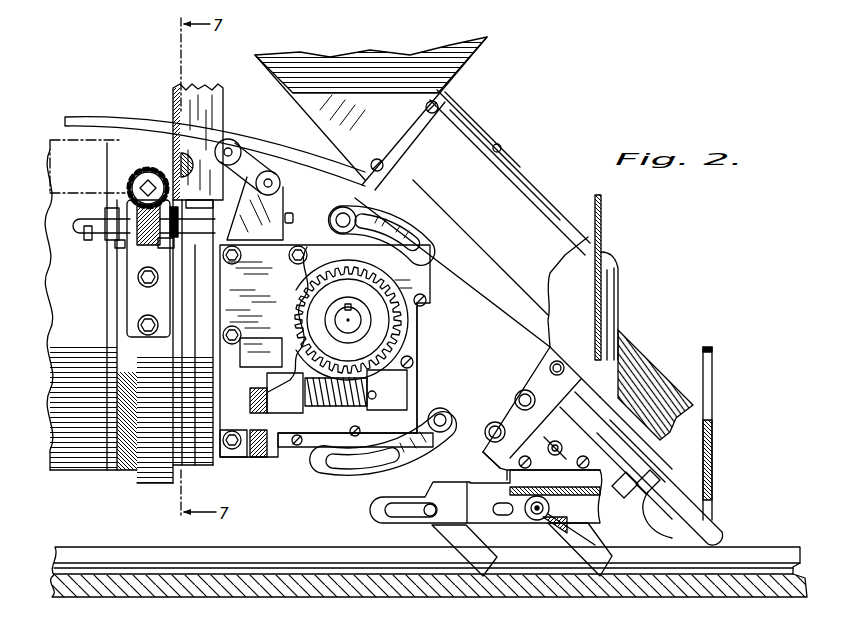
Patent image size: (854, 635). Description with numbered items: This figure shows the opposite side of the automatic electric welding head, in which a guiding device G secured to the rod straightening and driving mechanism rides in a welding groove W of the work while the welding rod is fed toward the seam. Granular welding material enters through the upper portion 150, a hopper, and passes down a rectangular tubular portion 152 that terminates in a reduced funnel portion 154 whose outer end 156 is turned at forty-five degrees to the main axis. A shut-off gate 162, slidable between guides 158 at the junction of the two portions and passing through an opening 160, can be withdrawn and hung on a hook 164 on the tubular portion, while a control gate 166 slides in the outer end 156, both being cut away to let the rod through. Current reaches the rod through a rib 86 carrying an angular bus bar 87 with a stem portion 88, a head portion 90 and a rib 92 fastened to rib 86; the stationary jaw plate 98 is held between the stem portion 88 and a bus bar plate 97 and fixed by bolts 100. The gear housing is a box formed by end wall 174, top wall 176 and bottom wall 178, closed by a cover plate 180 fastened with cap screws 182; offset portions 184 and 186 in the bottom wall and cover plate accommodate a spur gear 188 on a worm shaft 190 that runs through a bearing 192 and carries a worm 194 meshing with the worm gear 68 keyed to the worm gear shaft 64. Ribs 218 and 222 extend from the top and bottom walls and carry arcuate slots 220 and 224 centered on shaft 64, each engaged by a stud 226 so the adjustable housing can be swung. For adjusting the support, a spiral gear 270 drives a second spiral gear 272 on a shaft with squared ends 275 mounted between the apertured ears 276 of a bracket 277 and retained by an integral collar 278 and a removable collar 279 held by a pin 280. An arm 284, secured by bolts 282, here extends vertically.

The worm gear shaft 64 is at (348, 317).
The worm gear 68 is at (348, 320).
The rib 86 is at (484, 424).
The bus bar 87 is at (507, 458).
The stem portion 88 is at (643, 492).
The head portion 90 is at (538, 424).
The rib 92 is at (493, 407).
The bus bar plate 97 is at (660, 474).
The stationary jaw plate 98 is at (663, 508).
The bolts 100 is at (630, 487).
The upper portion 150 is at (463, 67).
The rectangular tubular portion 152 is at (530, 187).
The funnel portion 154 is at (658, 367).
The outer end 156 is at (690, 489).
The guides 158 is at (608, 313).
The opening 160 is at (619, 264).
The shut-off gate 162 is at (601, 233).
The hook 164 is at (494, 144).
The control gate 166 is at (713, 386).
The end wall 174 is at (414, 337).
The top wall 176 is at (304, 243).
The bottom wall 178 is at (300, 425).
The cover plate 180 is at (240, 458).
The cap screws 182 is at (231, 340).
The offset portion 184 is at (268, 457).
The offset portion 186 is at (268, 347).
The spur gear 188 is at (260, 444).
The worm shaft 190 is at (272, 388).
The bearing 192 is at (285, 393).
The worm 194 is at (334, 407).
The rib 218 is at (414, 281).
The arcuate slot 220 is at (398, 240).
The rib 222 is at (426, 458).
The arcuate slot 224 is at (370, 458).
The stud 226 is at (351, 217).
The spiral gear 270 is at (157, 158).
The second spiral gear 272 is at (160, 250).
The squared ends 275 is at (88, 236).
The apertured ears 276 is at (127, 203).
The bracket 277 is at (133, 307).
The integral collar 278 is at (173, 234).
The removable collar 279 is at (117, 247).
The pin 280 is at (104, 216).
The bolts 282 is at (190, 160).
The arm 284 is at (226, 73).
The guiding device G is at (377, 514).
The welding groove W is at (408, 577).